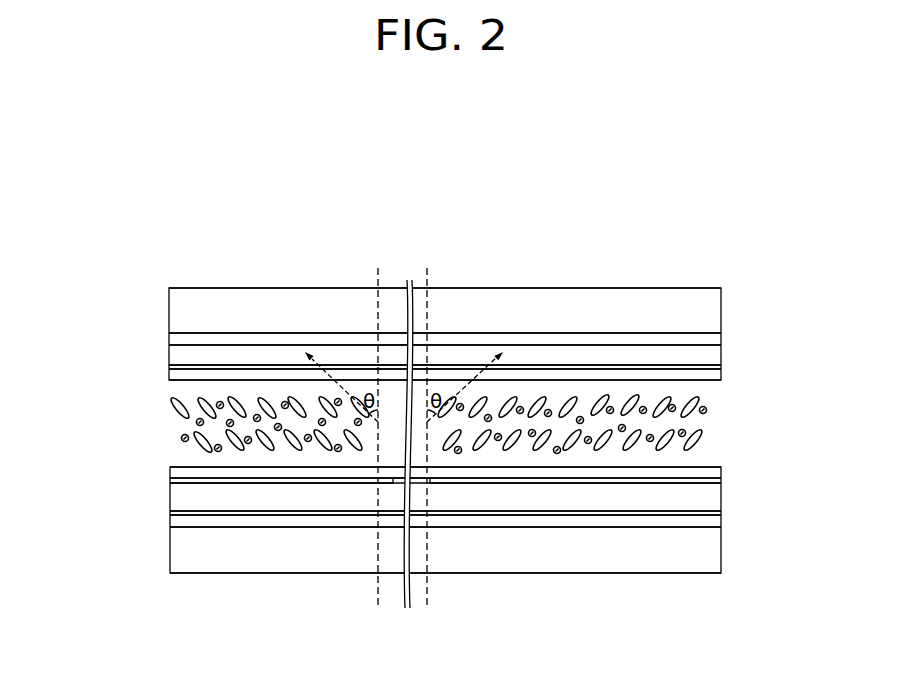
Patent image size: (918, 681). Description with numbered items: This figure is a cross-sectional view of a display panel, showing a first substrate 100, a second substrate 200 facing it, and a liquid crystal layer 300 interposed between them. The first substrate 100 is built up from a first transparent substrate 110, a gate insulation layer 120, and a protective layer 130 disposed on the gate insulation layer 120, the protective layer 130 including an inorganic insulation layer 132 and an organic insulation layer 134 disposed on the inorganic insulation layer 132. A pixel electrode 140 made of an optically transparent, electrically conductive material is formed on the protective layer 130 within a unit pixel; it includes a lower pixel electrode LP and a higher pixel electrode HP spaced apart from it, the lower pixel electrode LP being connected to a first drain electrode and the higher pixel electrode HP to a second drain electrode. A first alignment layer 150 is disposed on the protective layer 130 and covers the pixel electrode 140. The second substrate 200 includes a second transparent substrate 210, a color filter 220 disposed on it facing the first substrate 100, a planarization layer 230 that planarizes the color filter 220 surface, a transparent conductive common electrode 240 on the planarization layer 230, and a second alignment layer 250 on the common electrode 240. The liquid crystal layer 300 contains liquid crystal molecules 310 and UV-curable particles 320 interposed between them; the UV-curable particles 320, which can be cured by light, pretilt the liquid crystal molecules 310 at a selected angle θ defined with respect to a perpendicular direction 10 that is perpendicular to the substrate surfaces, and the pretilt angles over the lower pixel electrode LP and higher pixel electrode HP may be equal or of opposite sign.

The perpendicular direction 10 is at (432, 259).
The first substrate 100 is at (361, 510).
The first transparent substrate 110 is at (383, 554).
The gate insulation layer 120 is at (171, 527).
The protective layer 130 is at (383, 504).
The inorganic insulation layer 132 is at (171, 515).
The organic insulation layer 134 is at (171, 488).
The pixel electrode 140 is at (171, 481).
The first alignment layer 150 is at (171, 470).
The second substrate 200 is at (384, 358).
The second transparent substrate 210 is at (173, 308).
The color filter 220 is at (173, 337).
The planarization layer 230 is at (173, 357).
The common electrode 240 is at (173, 367).
The second alignment layer 250 is at (408, 398).
The liquid crystal layer 300 is at (510, 421).
The liquid crystal molecules 310 is at (716, 431).
The UV-curable particles 320 is at (716, 405).
The higher pixel electrode HP is at (297, 483).
The lower pixel electrode LP is at (518, 483).